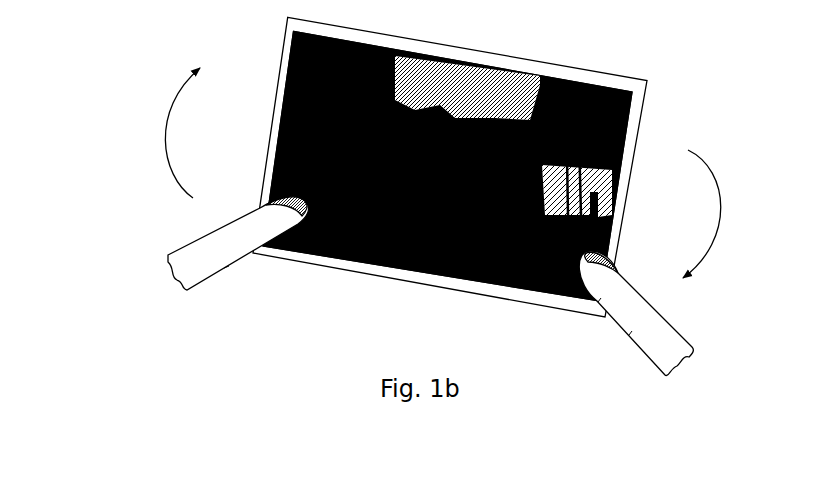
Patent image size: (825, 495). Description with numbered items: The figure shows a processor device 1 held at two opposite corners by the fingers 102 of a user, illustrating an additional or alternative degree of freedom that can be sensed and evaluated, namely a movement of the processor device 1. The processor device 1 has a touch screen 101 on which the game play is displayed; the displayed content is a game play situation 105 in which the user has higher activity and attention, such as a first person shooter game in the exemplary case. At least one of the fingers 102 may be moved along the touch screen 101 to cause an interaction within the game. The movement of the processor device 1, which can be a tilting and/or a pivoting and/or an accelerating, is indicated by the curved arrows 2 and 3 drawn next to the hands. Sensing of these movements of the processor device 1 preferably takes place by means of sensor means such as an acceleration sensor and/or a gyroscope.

The processor device 1 is at (487, 158).
The touch screen 101 is at (643, 95).
The game play situation 105 is at (608, 178).
The fingers 102 is at (197, 243).
The arrow 2 is at (722, 187).
The arrow 3 is at (165, 123).